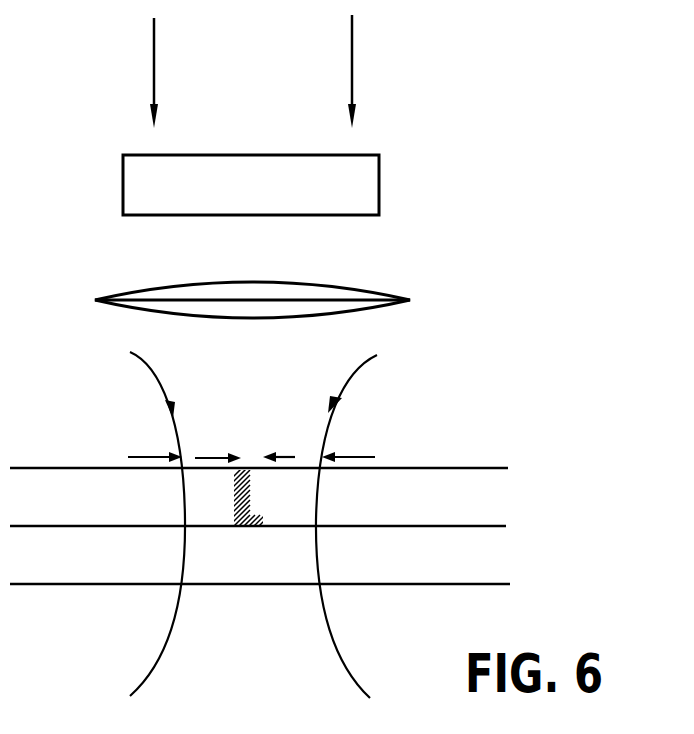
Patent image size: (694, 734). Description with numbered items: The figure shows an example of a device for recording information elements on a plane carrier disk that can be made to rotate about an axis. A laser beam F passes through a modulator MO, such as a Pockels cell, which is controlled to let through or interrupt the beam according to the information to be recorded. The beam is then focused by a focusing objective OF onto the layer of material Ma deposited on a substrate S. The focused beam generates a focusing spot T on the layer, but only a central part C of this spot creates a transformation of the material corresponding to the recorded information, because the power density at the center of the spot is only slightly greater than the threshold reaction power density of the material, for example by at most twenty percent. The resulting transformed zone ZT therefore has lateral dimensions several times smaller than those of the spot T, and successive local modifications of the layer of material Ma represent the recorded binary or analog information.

The laser beam F is at (325, 78).
The modulator MO is at (373, 199).
The focusing objective OF is at (396, 305).
The focusing spot T is at (239, 446).
The central part C is at (245, 446).
The transformed zone ZT is at (232, 503).
The layer of material Ma is at (494, 503).
The substrate S is at (492, 564).